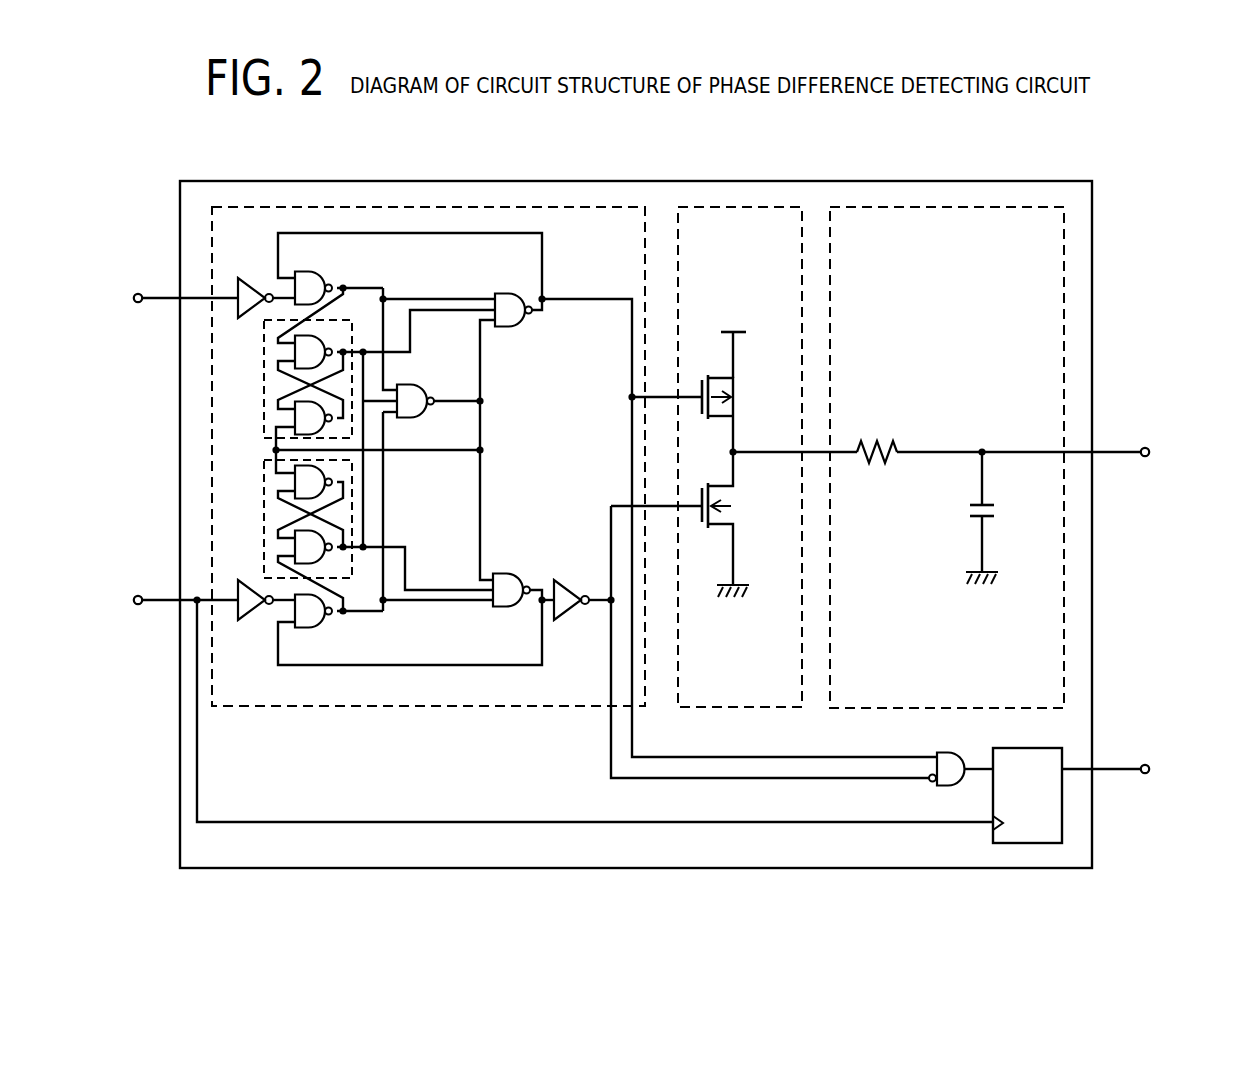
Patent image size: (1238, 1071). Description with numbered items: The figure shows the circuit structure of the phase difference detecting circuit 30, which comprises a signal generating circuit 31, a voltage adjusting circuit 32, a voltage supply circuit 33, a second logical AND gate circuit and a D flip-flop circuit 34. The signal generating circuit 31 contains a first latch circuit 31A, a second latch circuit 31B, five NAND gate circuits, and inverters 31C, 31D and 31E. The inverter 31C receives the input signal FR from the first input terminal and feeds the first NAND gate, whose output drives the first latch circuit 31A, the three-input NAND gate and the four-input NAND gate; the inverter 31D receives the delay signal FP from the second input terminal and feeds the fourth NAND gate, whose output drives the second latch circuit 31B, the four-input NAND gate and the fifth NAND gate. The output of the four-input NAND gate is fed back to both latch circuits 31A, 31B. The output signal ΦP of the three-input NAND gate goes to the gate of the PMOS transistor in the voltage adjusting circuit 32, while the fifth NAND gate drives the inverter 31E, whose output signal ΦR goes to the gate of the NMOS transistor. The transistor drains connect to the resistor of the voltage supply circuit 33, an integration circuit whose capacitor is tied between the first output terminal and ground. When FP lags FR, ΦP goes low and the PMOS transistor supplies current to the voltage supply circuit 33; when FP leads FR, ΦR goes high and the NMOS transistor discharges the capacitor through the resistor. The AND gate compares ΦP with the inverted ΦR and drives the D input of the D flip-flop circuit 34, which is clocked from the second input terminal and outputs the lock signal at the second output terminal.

The phase difference detecting circuit 30 is at (1116, 200).
The signal generating circuit 31 is at (437, 207).
The first latch circuit 31A is at (264, 400).
The second latch circuit 31B is at (264, 533).
The inverter 31C is at (250, 286).
The inverter 31D is at (246, 615).
The inverter 31E is at (563, 588).
The voltage adjusting circuit 32 is at (745, 207).
The voltage supply circuit 33 is at (943, 207).
The D flip-flop circuit 34 is at (1052, 843).